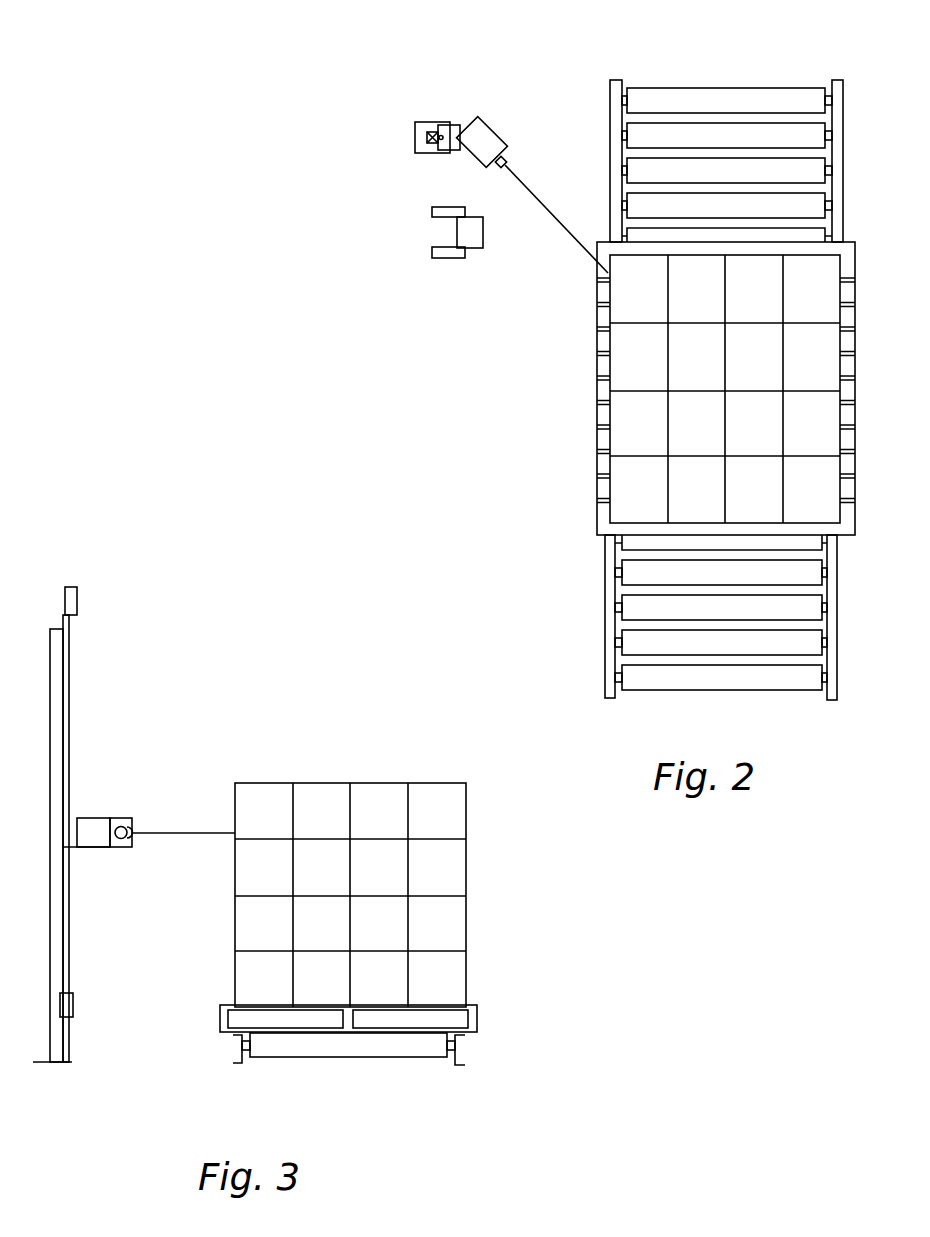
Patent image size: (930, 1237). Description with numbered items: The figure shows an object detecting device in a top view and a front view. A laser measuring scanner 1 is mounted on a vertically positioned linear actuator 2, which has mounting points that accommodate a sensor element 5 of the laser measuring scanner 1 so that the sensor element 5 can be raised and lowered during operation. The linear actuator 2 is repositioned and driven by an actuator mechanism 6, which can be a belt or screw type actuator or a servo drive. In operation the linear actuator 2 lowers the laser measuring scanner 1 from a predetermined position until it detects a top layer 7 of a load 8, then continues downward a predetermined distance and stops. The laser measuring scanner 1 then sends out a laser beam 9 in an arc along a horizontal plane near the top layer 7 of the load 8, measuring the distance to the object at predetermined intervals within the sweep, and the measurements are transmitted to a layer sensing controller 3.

In FIG. 2, the laser measuring scanner 1 is at (497, 128).
In FIG. 3, the laser measuring scanner 1 is at (87, 818).
In FIG. 2, the linear actuator 2 is at (427, 137).
In FIG. 3, the linear actuator 2 is at (65, 663).
In FIG. 2, the layer sensing controller 3 is at (455, 232).
In FIG. 2, the sensor element 5 is at (498, 163).
In FIG. 3, the sensor element 5 is at (124, 820).
In FIG. 3, the actuator mechanism 6 is at (77, 597).
In FIG. 2, the top layer 7 is at (635, 440).
In FIG. 3, the top layer 7 is at (308, 783).
In FIG. 2, the load 8 is at (607, 507).
In FIG. 3, the load 8 is at (464, 914).
In FIG. 2, the laser beam 9 is at (580, 247).
In FIG. 3, the laser beam 9 is at (208, 837).